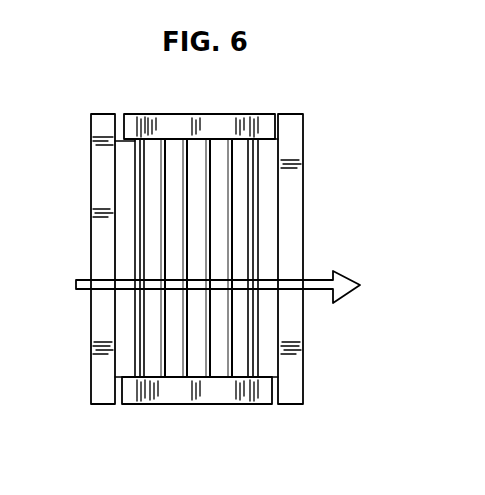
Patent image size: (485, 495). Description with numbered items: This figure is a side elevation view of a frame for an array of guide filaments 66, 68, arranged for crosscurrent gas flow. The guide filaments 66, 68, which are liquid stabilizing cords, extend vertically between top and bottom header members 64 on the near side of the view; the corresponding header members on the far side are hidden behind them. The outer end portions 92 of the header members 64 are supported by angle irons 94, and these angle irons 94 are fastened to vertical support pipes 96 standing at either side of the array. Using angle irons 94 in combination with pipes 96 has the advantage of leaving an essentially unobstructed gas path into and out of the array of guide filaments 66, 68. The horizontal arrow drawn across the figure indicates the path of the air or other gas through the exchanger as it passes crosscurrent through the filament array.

The header members 64 is at (197, 123).
The guide filaments 66 is at (163, 261).
The guide filaments 68 is at (133, 220).
The outer end portions 92 is at (138, 125).
The angle irons 94 is at (91, 137).
The vertical support pipes 96 is at (100, 170).